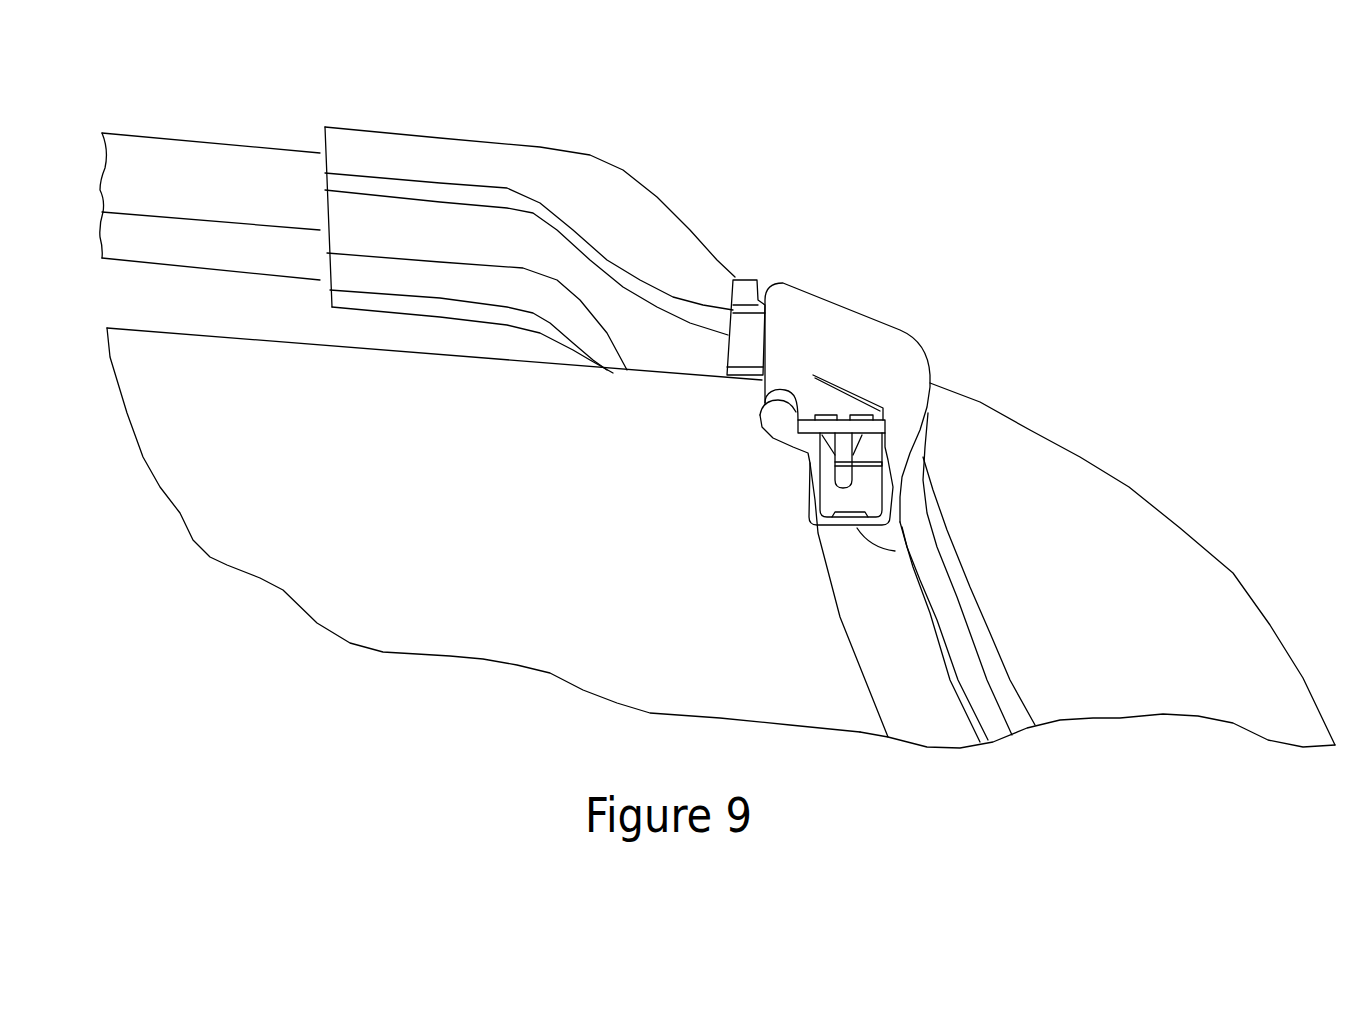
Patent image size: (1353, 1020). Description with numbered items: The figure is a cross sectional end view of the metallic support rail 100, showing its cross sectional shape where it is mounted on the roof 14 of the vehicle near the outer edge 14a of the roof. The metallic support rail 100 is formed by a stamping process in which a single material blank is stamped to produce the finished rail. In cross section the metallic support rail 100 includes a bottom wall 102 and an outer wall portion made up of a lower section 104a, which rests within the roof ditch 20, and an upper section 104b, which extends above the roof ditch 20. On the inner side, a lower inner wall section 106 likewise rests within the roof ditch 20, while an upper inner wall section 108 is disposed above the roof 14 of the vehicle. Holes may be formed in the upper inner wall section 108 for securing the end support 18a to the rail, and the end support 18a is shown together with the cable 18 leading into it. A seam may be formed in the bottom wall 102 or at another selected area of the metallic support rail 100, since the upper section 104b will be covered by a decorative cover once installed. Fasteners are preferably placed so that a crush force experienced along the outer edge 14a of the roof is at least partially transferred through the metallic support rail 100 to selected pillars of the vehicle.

The roof 14 is at (146, 345).
The outer edge of the roof 14a is at (1024, 438).
The cable 18 is at (203, 122).
The end support 18a is at (462, 147).
The roof ditch 20 is at (913, 713).
The metallic support rail 100 is at (905, 312).
The bottom wall 102 is at (895, 551).
The lower section of outer wall portion 104a is at (897, 475).
The upper section of outer wall portion 104b is at (817, 297).
The lower inner wall section 106 is at (818, 487).
The upper inner wall section 108 is at (762, 388).